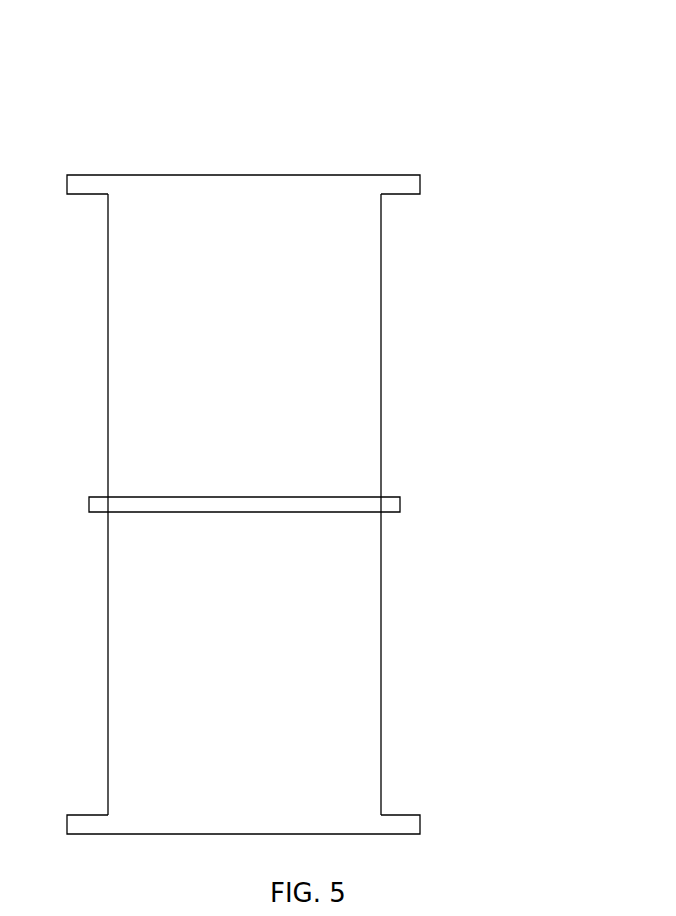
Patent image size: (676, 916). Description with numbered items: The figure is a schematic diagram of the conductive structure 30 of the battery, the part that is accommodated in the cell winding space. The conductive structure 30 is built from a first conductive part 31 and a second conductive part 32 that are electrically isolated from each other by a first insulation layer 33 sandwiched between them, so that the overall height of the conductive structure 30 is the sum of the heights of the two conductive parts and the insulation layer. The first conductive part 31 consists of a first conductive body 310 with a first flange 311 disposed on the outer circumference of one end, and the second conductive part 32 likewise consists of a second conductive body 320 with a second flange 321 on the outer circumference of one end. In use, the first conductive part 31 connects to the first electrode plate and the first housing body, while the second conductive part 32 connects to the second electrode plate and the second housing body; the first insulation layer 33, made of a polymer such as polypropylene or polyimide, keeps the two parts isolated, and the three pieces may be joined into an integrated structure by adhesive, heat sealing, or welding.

The conductive structure 30 is at (309, 426).
The first conductive part 31 is at (309, 665).
The first conductive body 310 is at (360, 705).
The first flange 311 is at (398, 825).
The second conductive part 32 is at (309, 336).
The second conductive body 320 is at (367, 297).
The second flange 321 is at (398, 185).
The first insulation layer 33 is at (389, 503).